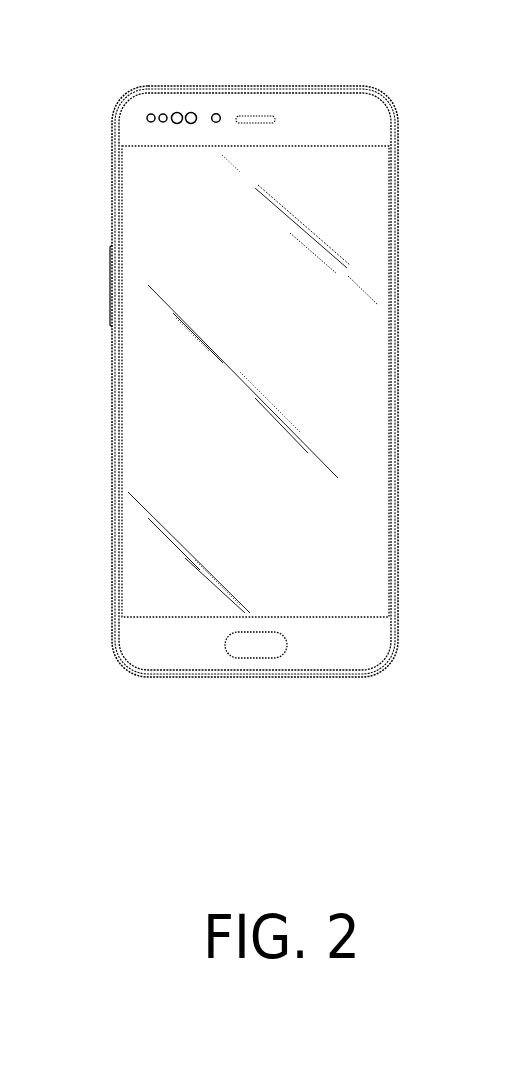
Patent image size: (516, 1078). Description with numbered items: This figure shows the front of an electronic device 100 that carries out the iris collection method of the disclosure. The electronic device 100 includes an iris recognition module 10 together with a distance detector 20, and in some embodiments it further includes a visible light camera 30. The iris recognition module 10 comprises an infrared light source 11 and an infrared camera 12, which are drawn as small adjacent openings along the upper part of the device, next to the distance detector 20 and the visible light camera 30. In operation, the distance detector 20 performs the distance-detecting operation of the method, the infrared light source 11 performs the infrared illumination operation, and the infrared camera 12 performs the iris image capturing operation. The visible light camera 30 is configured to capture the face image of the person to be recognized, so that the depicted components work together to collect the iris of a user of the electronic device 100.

The electronic device 100 is at (285, 70).
The iris recognition module 10 is at (166, 65).
The infrared light source 11 is at (163, 114).
The infrared camera 12 is at (174, 112).
The distance detector 20 is at (146, 119).
The visible light camera 30 is at (194, 113).